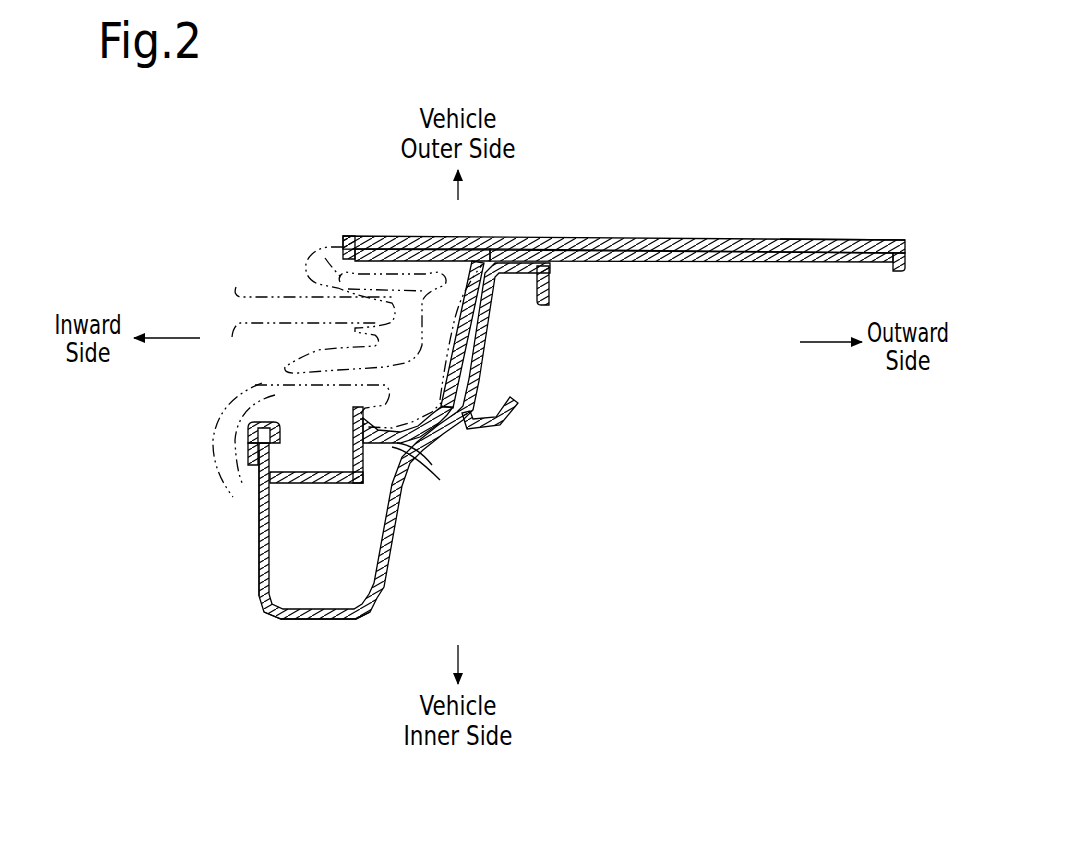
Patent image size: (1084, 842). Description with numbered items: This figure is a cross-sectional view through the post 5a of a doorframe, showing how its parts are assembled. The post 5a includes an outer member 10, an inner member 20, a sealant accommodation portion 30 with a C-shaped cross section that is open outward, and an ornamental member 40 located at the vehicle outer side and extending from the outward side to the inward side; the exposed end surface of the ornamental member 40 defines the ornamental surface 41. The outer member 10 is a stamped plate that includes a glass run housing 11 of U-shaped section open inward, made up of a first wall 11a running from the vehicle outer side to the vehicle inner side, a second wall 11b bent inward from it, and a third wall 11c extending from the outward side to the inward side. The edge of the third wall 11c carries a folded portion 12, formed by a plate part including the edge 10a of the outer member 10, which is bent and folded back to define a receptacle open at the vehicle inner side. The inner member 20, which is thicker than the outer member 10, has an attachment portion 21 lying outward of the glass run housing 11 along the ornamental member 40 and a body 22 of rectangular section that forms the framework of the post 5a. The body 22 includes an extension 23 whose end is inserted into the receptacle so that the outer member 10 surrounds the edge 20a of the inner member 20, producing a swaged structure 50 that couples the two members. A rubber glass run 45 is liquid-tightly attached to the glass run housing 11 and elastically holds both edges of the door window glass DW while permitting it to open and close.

The post 5a is at (831, 178).
The ornamental member 40 is at (722, 237).
The ornamental surface 41 is at (795, 239).
The attachment portion 21 is at (758, 262).
The glass run housing 11 is at (447, 258).
The first wall 11a is at (474, 336).
The second wall 11b is at (418, 441).
The third wall 11c is at (343, 465).
The outer member 10 is at (336, 494).
The edge 10a is at (243, 465).
The folded portion 12 is at (247, 429).
The swaged structure 50 is at (238, 470).
The inner member 20 is at (403, 549).
The edge 20a is at (255, 432).
The body 22 is at (263, 614).
The extension 23 is at (272, 548).
The sealant accommodation portion 30 is at (512, 428).
The glass run 45 is at (305, 272).
The door window glass DW is at (267, 292).